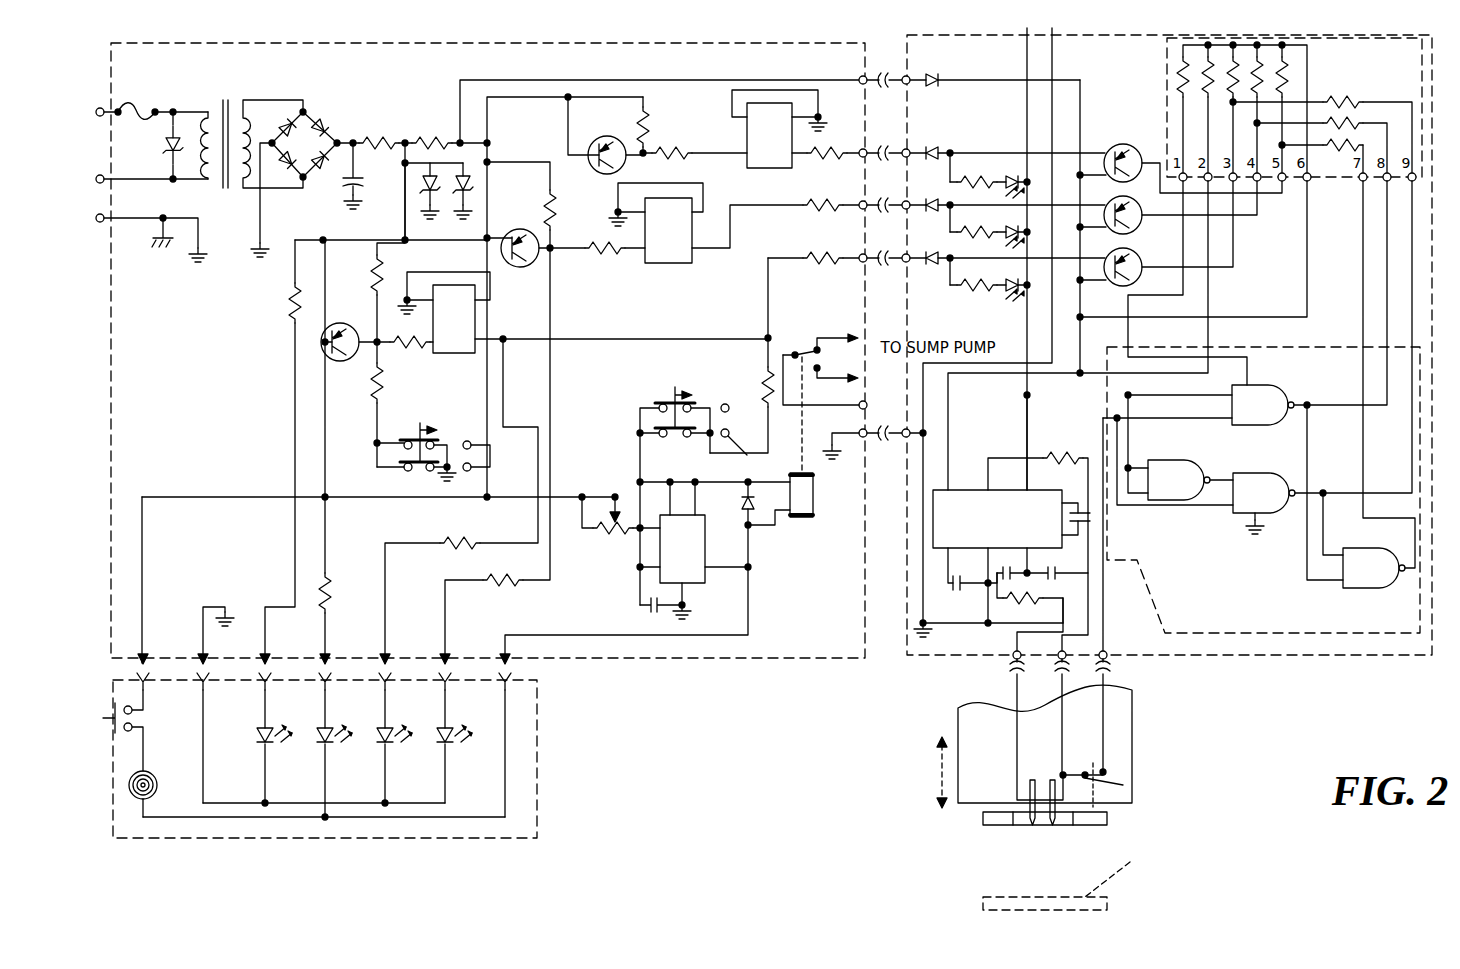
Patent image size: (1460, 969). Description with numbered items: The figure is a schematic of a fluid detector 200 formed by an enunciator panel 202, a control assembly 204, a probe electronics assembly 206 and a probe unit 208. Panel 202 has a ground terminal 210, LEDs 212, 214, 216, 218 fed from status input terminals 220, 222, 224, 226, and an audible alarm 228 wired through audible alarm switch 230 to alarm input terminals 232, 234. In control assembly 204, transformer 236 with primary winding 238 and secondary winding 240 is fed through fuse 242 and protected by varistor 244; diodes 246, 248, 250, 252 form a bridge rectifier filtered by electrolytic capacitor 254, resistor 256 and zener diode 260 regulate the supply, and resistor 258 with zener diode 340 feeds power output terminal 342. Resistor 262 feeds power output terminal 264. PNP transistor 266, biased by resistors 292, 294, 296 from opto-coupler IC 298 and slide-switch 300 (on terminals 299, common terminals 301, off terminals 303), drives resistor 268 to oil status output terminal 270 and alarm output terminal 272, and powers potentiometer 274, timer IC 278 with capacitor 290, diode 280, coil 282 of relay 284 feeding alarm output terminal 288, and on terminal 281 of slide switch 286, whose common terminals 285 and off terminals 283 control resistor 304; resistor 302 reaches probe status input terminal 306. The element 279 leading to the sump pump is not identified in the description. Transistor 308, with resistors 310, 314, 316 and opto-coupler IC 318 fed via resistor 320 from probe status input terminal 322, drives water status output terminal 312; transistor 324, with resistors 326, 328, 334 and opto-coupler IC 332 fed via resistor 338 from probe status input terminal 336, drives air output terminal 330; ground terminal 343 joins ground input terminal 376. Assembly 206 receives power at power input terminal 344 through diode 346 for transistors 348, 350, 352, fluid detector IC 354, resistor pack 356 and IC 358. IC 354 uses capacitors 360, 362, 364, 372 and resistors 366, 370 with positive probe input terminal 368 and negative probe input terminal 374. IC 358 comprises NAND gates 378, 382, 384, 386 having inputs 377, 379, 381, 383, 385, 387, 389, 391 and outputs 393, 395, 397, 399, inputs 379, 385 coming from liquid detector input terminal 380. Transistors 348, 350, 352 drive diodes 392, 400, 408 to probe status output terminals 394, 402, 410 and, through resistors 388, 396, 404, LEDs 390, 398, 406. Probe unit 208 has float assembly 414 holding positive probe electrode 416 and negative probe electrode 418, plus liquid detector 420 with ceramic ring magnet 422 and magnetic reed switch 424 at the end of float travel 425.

The fluid detector 200 is at (758, 695).
The enunciator panel 202 is at (545, 840).
The control assembly 204 is at (624, 668).
The probe electronics assembly 206 is at (930, 710).
The probe unit 208 is at (1156, 736).
The ground terminal 210 is at (209, 684).
The light emitting diode 212 is at (271, 746).
The light emitting diode 214 is at (331, 746).
The light emitting diode 216 is at (391, 746).
The light emitting diode 218 is at (451, 746).
The power status input terminal 220 is at (271, 684).
The oil status input terminal 222 is at (331, 684).
The water status input terminal 224 is at (391, 684).
The air status input terminal 226 is at (451, 684).
The audible alarm 228 is at (158, 788).
The audible alarm switch 230 is at (151, 736).
The alarm input terminal 232 is at (150, 683).
The alarm input terminal 234 is at (511, 684).
The transformer 236 is at (227, 96).
The primary winding 238 is at (204, 108).
The secondary winding 240 is at (240, 182).
The fuse 242 is at (132, 106).
The varistor 244 is at (162, 156).
The diode 246 is at (286, 120).
The diode 248 is at (326, 127).
The diode 250 is at (283, 166).
The diode 252 is at (320, 168).
The electrolytic capacitor 254 is at (360, 188).
The resistor 256 is at (380, 139).
The resistor 258 is at (432, 138).
The zener diode 260 is at (436, 176).
The resistor 262 is at (293, 303).
The power output terminal 264 is at (270, 660).
The transistor 266 is at (349, 326).
The resistor 268 is at (330, 586).
The oil status output terminal 270 is at (331, 658).
The alarm output terminal 272 is at (150, 660).
The potentiometer 274 is at (611, 536).
The timer integrated circuit 278 is at (700, 590).
The relay contacts 279 is at (789, 343).
The diode 280 is at (741, 503).
The on terminal 281 is at (656, 442).
The coil 282 is at (802, 517).
The off terminals 283 is at (741, 446).
The relay 284 is at (818, 478).
The common terminals 285 is at (702, 424).
The slide switch 286 is at (650, 390).
The alarm output terminal 288 is at (510, 665).
The capacitor 290 is at (648, 612).
The resistor 292 is at (375, 282).
The resistor 294 is at (412, 351).
The resistor 296 is at (375, 392).
The opto-coupler integrated circuit 298 is at (466, 355).
The on terminals 299 is at (404, 471).
The slide-switch 300 is at (425, 430).
The common terminals 301 is at (427, 472).
The resistor 302 is at (818, 264).
The off terminals 303 is at (470, 442).
The resistor 304 is at (765, 380).
The probe status input terminal 306 is at (860, 263).
The transistor 308 is at (522, 268).
The resistor 310 is at (478, 540).
The water status output terminal 312 is at (390, 658).
The resistor 314 is at (545, 206).
The resistor 316 is at (605, 262).
The opto-coupler integrated circuit 318 is at (670, 264).
The resistor 320 is at (808, 212).
The probe status input terminal 322 is at (859, 210).
The transistor 324 is at (606, 137).
The resistor 326 is at (648, 126).
The resistor 328 is at (516, 580).
The air output terminal 330 is at (451, 658).
The opto-coupler integrated circuit 332 is at (770, 170).
The resistor 334 is at (676, 152).
The probe status input terminal 336 is at (823, 118).
The resistor 338 is at (826, 160).
The zener diode 340 is at (462, 208).
The power output terminal 342 is at (858, 78).
The ground terminal 343 is at (859, 433).
The power input terminal 344 is at (909, 77).
The diode 346 is at (940, 86).
The transistor 348 is at (1128, 145).
The transistor 350 is at (1142, 229).
The transistor 352 is at (1142, 277).
The fluid detector integrated circuit 354 is at (973, 488).
The resistor pack 356 is at (1342, 44).
The integrated circuit 358 is at (1358, 636).
The capacitor 360 is at (1084, 505).
The capacitor 362 is at (1016, 578).
The capacitor 364 is at (1062, 573).
The resistor 366 is at (1030, 600).
The positive probe input terminal 368 is at (1010, 666).
The resistor 370 is at (1062, 454).
The tantalum capacitor 372 is at (954, 594).
The negative probe input terminal 374 is at (1058, 672).
The ground input terminal 376 is at (868, 406).
The input 377 is at (1240, 385).
The NAND gate 378 is at (1286, 424).
The input 379 is at (1224, 420).
The liquid detector input terminal 380 is at (1110, 660).
The input 381 is at (1148, 462).
The NAND gate 382 is at (1191, 503).
The input 383 is at (1152, 503).
The NAND gate 384 is at (1278, 514).
The input 385 is at (1247, 527).
The NAND gate 386 is at (1375, 590).
The input 387 is at (1250, 474).
The resistor 388 is at (956, 182).
The input 389 is at (1343, 586).
The light emitting diode 390 is at (1004, 178).
The input 391 is at (1360, 550).
The diode 392 is at (937, 150).
The output 393 is at (1294, 402).
The probe status output terminal 394 is at (903, 150).
The output 395 is at (1207, 477).
The resistor 396 is at (946, 220).
The output 397 is at (1296, 492).
The light emitting diode 398 is at (1004, 229).
The output 399 is at (1403, 572).
The diode 400 is at (903, 256).
The probe status output terminal 402 is at (903, 202).
The resistor 404 is at (977, 292).
The light emitting diode 406 is at (1004, 282).
The diode 408 is at (932, 266).
The probe status output terminal 410 is at (903, 263).
The float assembly 414 is at (970, 806).
The positive probe electrode 416 is at (1030, 830).
The negative probe electrode 418 is at (1054, 830).
The liquid detector 420 is at (1138, 811).
The ceramic ring magnet 422 is at (1087, 823).
The magnetic reed switch 424 is at (1118, 767).
The float travel 425 is at (938, 781).